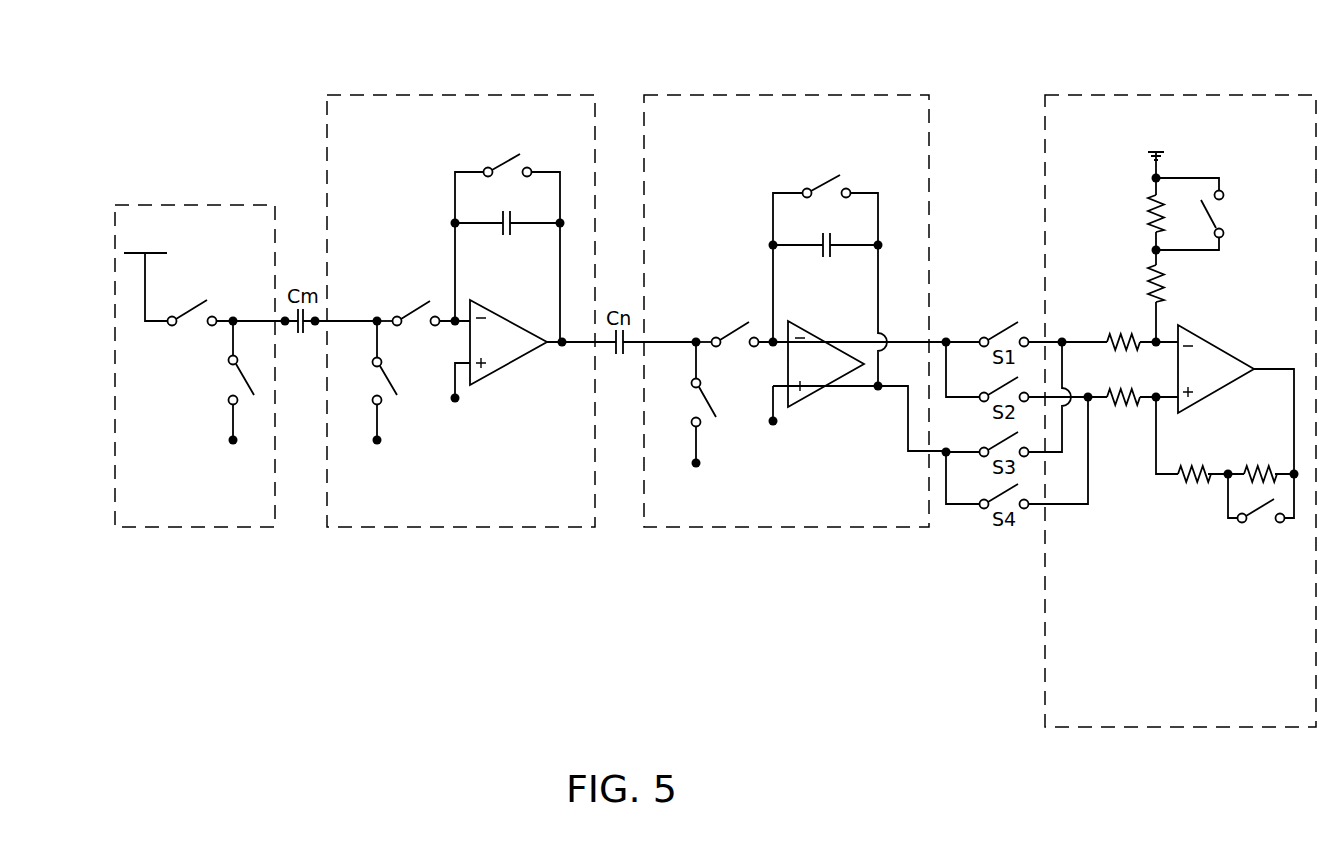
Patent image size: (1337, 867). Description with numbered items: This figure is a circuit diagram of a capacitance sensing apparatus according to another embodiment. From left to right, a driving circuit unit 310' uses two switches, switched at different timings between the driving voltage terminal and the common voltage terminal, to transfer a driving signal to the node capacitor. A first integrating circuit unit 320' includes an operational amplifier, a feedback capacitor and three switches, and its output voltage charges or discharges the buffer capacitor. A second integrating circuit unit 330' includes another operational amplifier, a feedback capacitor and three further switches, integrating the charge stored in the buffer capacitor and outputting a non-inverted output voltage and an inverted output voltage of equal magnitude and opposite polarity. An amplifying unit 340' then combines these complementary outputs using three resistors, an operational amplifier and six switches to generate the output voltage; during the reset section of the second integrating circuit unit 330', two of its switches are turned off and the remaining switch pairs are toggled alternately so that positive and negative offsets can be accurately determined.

The driving circuit unit 310' is at (200, 336).
The first integrating circuit unit 320' is at (471, 282).
The second integrating circuit unit 330' is at (795, 282).
The amplifying unit 340' is at (1180, 382).